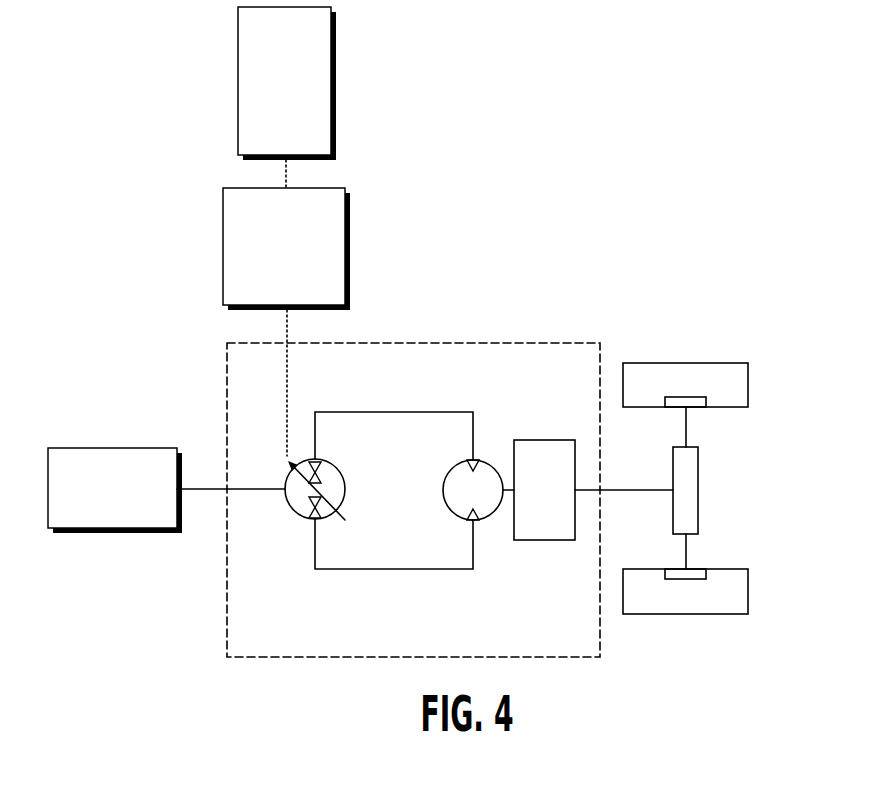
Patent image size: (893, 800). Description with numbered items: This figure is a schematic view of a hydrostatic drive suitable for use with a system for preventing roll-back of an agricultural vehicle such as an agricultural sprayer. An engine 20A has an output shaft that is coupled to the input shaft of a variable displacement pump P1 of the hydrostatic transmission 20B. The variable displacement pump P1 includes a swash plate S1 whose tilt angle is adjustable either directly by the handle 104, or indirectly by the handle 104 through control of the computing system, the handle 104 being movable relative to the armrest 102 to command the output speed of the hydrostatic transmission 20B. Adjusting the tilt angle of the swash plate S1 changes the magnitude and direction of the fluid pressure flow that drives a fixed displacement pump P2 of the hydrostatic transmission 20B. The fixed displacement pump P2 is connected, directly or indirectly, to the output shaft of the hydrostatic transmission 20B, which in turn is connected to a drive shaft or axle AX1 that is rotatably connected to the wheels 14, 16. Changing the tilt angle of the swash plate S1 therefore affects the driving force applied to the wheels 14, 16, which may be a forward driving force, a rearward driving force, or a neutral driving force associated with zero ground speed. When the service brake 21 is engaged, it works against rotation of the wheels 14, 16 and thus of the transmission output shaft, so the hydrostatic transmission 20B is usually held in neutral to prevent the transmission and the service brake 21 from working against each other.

The multi-function handle 104 is at (268, 146).
The armrest control panel 102 is at (303, 295).
The engine 20A is at (96, 522).
The hydrostatic transmission 20B is at (436, 647).
The variable displacement pump P1 is at (345, 477).
The swash plate S1 is at (345, 512).
The fixed displacement pump P2 is at (482, 463).
The axle AX1 is at (688, 428).
The wheel 14 is at (691, 492).
The wheel 16 is at (724, 363).
The service brake 21 is at (705, 400).